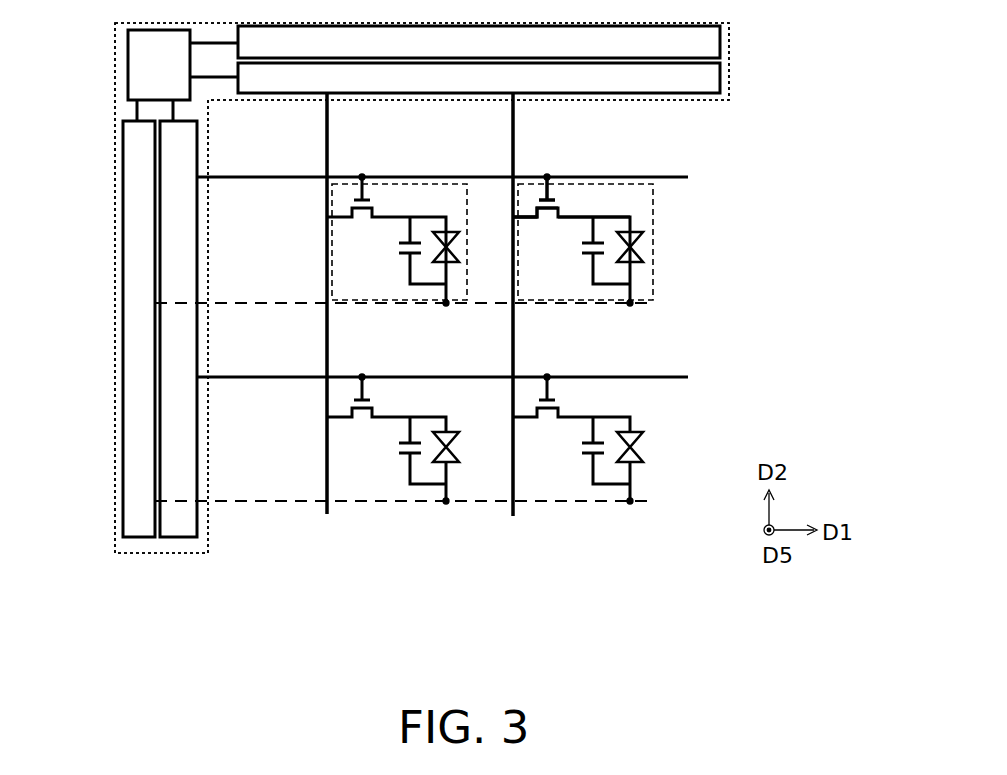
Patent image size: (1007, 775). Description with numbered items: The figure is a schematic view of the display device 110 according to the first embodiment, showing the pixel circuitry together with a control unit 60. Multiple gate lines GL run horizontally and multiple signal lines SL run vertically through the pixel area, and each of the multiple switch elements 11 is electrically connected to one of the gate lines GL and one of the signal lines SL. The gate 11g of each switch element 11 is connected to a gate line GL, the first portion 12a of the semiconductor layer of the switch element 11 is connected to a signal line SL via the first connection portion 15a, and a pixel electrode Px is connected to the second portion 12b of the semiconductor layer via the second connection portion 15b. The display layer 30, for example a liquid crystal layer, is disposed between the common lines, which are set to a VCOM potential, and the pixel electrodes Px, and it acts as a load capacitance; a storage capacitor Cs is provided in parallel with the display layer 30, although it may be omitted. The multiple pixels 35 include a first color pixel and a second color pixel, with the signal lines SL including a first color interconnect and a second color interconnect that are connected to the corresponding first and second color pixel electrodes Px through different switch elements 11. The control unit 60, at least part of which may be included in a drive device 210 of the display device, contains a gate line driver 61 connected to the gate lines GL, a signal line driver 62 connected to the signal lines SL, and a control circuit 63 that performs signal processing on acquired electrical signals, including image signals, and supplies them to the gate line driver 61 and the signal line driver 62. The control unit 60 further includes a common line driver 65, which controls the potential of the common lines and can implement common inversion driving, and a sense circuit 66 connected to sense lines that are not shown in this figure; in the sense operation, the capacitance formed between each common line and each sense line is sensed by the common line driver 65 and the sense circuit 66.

The switch element 11 is at (558, 197).
The gate 11g is at (597, 176).
The first portion of the semiconductor layer 12a is at (524, 216).
The second portion of the semiconductor layer 12b is at (559, 213).
The first connection portion 15a is at (510, 216).
The second connection portion 15b is at (632, 217).
The display layer 30 is at (638, 247).
The pixel 35 is at (329, 245).
The control unit 60 is at (113, 535).
The drive device 210 is at (113, 535).
The gate line driver 61 is at (192, 538).
The signal line driver 62 is at (722, 77).
The control circuit 63 is at (127, 67).
The common line driver 65 is at (142, 538).
The sense circuit 66 is at (722, 48).
The display device 110 is at (782, 92).
The gate line GL is at (252, 178).
The signal line SL is at (329, 487).
The VCOM potential VCOM is at (631, 305).
The pixel electrode Px is at (450, 222).
The storage capacitor Cs is at (581, 262).